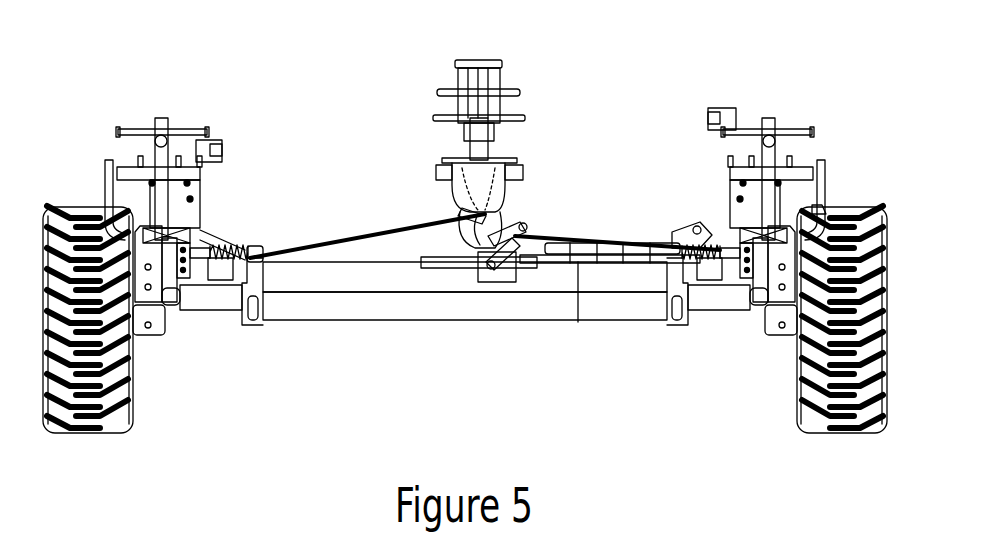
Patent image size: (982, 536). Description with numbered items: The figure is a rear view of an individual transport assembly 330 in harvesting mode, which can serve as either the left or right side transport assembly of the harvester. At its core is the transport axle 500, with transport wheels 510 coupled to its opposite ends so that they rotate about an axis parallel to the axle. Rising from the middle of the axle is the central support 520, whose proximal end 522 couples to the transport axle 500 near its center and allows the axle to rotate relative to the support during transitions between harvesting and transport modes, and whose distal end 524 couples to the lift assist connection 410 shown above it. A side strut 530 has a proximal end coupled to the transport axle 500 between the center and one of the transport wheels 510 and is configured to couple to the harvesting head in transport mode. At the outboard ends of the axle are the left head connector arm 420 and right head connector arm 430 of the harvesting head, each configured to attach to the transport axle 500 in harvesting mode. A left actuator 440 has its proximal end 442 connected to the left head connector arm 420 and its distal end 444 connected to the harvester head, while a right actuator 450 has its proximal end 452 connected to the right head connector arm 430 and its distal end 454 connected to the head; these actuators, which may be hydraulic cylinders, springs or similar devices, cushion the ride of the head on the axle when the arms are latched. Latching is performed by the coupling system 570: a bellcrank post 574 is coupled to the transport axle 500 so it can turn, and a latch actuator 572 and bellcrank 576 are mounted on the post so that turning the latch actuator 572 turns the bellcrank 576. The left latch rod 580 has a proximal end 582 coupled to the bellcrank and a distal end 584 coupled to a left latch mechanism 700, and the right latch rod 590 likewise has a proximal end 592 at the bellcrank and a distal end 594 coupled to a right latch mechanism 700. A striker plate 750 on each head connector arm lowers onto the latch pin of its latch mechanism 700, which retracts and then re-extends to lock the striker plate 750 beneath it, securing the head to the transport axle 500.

The transport assembly 330 is at (372, 126).
The lift assist connection 410 is at (540, 73).
The left head connector arm 420 is at (110, 188).
The right head connector arm 430 is at (817, 203).
The left actuator 440 is at (157, 197).
The proximal end of the left actuator 442 is at (197, 217).
The distal end of the left actuator 444 is at (163, 118).
The right actuator 450 is at (770, 183).
The proximal end of the right actuator 452 is at (823, 213).
The distal end of the right actuator 454 is at (783, 175).
The transport axle 500 is at (363, 298).
The transport wheels 510 is at (127, 385).
The central support 520 is at (460, 197).
The proximal end of the central support 522 is at (460, 243).
The distal end of the central support 524 is at (513, 170).
The side strut 530 is at (628, 233).
The coupling system 570 is at (441, 310).
The latch actuator 572 is at (508, 267).
The bellcrank post 574 is at (503, 243).
The bellcrank 576 is at (498, 240).
The left latch rod 580 is at (322, 237).
The proximal end of the left latch rod 582 is at (460, 212).
The distal end of the left latch rod 584 is at (250, 247).
The right latch rod 590 is at (605, 240).
The proximal end of the right latch rod 592 is at (508, 253).
The distal end of the right latch rod 594 is at (667, 227).
The latch mechanism 700 is at (229, 232).
The striker plate 750 is at (180, 288).